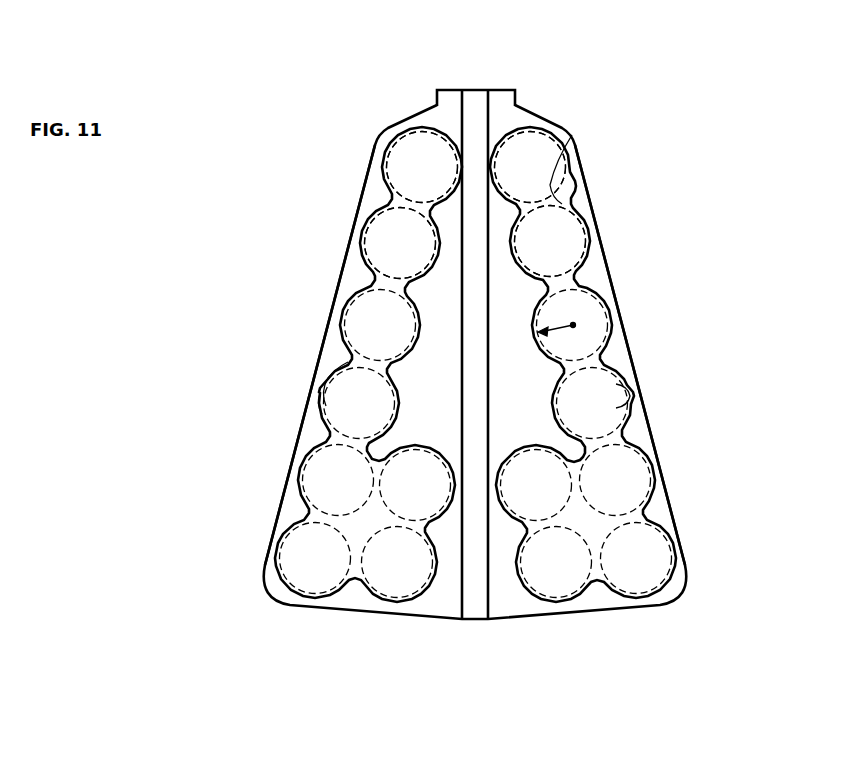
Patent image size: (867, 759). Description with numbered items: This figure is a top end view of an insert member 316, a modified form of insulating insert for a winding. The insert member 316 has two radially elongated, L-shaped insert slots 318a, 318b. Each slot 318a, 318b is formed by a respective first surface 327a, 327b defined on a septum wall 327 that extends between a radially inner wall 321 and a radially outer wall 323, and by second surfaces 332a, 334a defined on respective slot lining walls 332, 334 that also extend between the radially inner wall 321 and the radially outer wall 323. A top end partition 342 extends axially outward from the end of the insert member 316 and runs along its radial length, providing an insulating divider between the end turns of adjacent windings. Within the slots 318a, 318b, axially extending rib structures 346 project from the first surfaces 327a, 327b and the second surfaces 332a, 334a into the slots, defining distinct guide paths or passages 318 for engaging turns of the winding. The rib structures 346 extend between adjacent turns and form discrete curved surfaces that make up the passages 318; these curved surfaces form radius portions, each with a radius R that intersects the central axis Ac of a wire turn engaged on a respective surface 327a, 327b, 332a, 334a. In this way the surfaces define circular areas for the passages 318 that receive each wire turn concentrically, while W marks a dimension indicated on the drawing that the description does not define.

The insert member 316 is at (320, 188).
The passages 318 is at (387, 258).
The insert slot 318a is at (527, 145).
The insert slot 318b is at (417, 148).
The radially inner wall 321 is at (447, 113).
The radially outer wall 323 is at (433, 605).
The septum wall 327 is at (500, 590).
The first surface 327a is at (520, 238).
The first surface 327b is at (433, 262).
The slot lining wall 332 is at (653, 432).
The second surface 332a is at (617, 390).
The slot lining wall 334 is at (293, 437).
The second surface 334a is at (322, 425).
The top end partition 342 is at (479, 605).
The rib structures 346 is at (343, 343).
The wall thickness W is at (290, 474).
The radius R is at (556, 334).
The central axis Ac is at (577, 328).